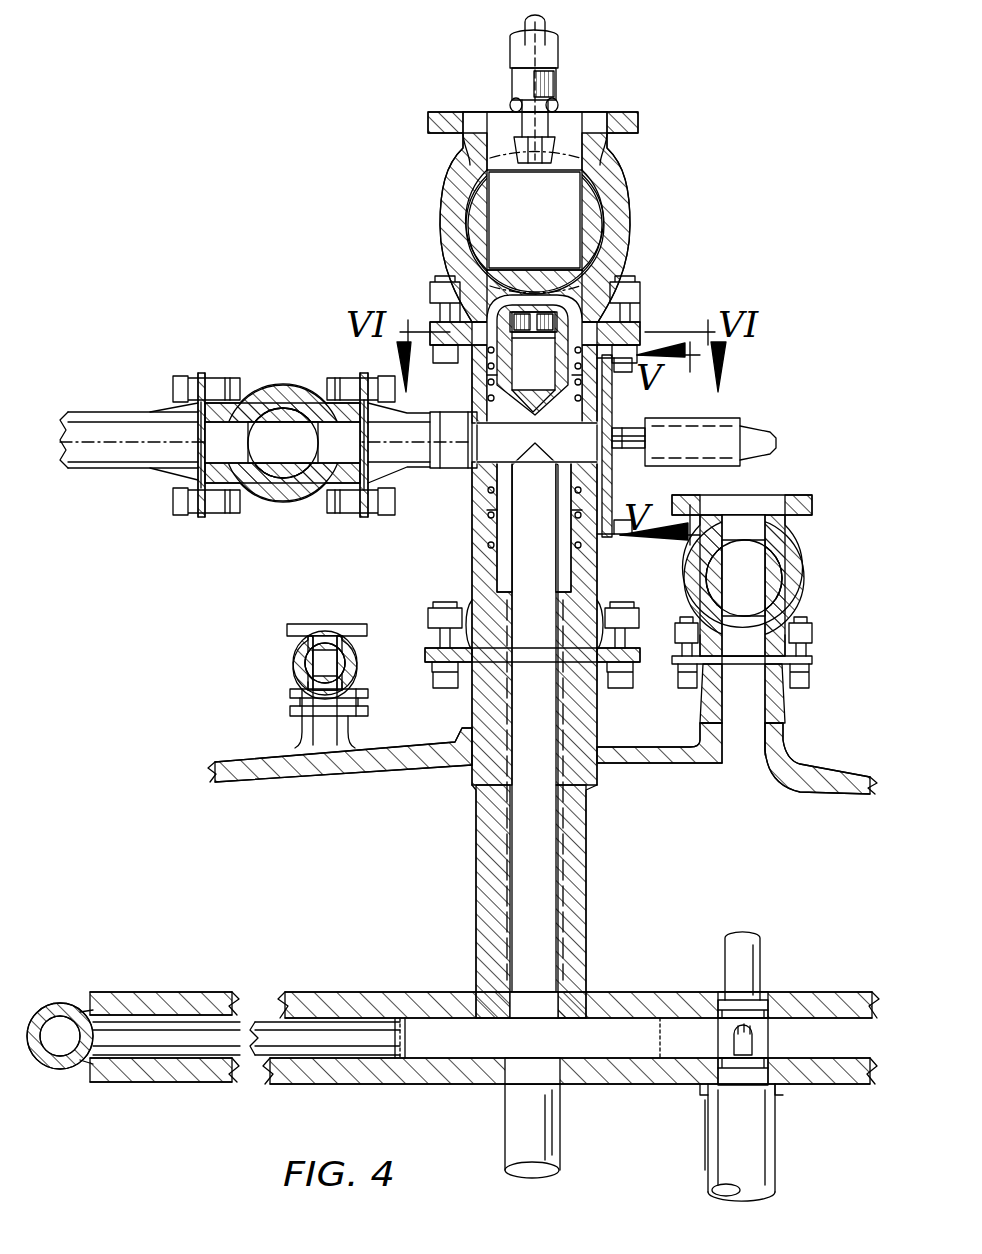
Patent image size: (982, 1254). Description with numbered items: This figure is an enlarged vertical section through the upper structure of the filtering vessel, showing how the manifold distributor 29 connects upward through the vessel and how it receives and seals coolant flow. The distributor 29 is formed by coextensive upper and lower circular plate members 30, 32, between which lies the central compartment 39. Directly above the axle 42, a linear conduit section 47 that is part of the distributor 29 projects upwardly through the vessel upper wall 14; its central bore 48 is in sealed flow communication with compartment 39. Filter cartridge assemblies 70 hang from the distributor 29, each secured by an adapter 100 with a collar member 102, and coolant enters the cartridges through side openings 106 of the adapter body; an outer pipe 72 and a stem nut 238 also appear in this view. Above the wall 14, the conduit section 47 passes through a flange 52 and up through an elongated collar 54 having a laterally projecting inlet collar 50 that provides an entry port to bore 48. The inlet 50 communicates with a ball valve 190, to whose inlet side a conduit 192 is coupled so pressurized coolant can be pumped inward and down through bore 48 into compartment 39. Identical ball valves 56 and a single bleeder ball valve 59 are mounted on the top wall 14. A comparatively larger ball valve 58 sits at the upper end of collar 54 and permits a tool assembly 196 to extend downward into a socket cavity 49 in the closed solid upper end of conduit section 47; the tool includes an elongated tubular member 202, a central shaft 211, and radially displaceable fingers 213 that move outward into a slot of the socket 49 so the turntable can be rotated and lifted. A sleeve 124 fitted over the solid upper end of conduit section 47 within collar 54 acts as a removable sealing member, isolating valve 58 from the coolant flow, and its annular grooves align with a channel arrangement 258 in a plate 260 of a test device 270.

The tool assembly 196 is at (579, 49).
The elongated tubular member 202 is at (556, 78).
The radially-displaceable fingers 213 is at (512, 108).
The shaft 211 is at (463, 163).
The stem nut 238 is at (533, 168).
The ball valve 58 is at (630, 215).
The sleeve 124 is at (564, 251).
The ball valve 190 is at (300, 358).
The conduit 192 is at (126, 388).
The socket cavity 49 is at (552, 391).
The inlet collar 50 is at (440, 478).
The channel arrangement 258 is at (625, 440).
The test device 270 is at (742, 422).
The plate 260 is at (612, 470).
The elongated collar 54 is at (472, 548).
The ball valve 56 is at (800, 571).
The bleeder ball valve 59 is at (330, 613).
The central bore 48 is at (548, 653).
The vessel upper wall 14 is at (222, 762).
The flange 52 is at (590, 704).
The linear conduit section 47 is at (586, 842).
The distributor 29 is at (355, 962).
The collar member 102 is at (762, 952).
The lower circular plate member 32 is at (866, 1000).
The central compartment 39 is at (533, 1063).
The adapter 100 is at (718, 1030).
The side openings 106 is at (755, 1040).
The upper circular plate member 30 is at (868, 1084).
The axle 42 is at (505, 1140).
The filter cartridge assembly 70 is at (694, 1147).
The outer pipe 72 is at (770, 1184).